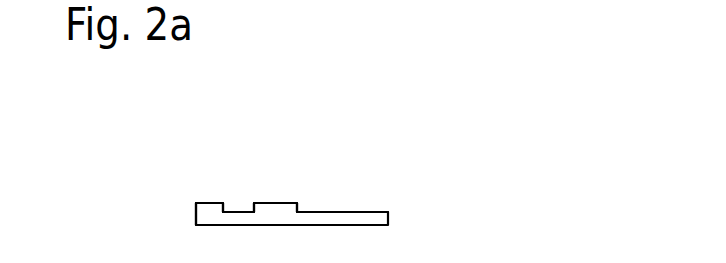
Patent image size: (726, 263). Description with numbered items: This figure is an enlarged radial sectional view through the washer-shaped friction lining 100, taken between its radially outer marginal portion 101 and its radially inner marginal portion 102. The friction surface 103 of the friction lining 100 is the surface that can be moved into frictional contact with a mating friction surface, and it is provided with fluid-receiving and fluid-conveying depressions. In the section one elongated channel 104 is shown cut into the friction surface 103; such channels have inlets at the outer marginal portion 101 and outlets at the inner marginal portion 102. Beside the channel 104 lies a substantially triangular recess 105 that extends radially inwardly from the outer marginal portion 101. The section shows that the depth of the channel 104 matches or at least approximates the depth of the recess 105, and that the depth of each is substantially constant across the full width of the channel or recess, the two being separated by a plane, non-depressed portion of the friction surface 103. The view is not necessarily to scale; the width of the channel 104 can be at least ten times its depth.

The friction lining 100 is at (299, 171).
The radially outer marginal portion 101 is at (388, 218).
The radially inner marginal portion 102 is at (197, 211).
The friction surface 103 is at (210, 202).
The channel 104 is at (240, 208).
The recess 105 is at (337, 207).